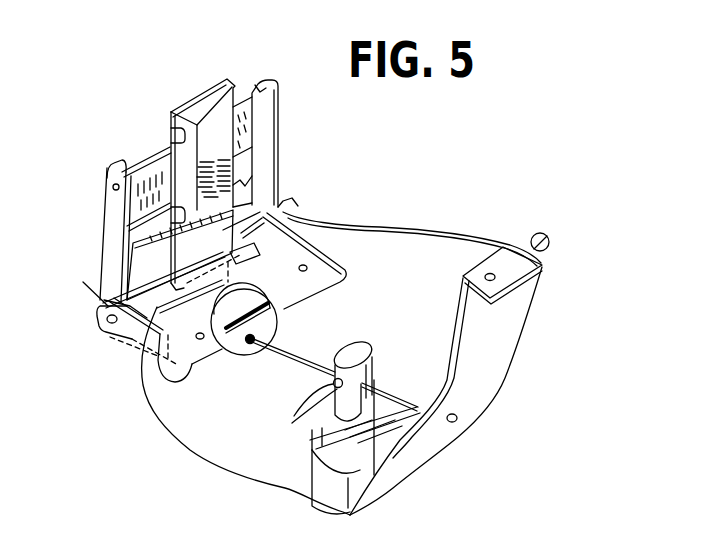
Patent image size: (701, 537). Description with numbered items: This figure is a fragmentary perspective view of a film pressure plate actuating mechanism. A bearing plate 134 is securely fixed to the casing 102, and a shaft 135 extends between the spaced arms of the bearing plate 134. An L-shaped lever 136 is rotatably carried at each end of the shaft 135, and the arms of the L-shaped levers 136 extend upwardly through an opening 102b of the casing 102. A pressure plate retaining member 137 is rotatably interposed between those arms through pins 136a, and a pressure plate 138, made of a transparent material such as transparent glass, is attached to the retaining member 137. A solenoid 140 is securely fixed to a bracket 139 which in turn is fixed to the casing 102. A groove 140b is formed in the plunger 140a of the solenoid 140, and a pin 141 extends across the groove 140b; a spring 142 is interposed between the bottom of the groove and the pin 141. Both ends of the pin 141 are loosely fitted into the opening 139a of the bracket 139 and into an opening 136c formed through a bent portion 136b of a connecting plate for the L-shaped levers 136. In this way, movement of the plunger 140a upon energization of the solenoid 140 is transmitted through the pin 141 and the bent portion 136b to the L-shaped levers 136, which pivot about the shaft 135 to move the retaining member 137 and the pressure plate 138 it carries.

The casing 102 is at (442, 210).
The opening of the casing 102b is at (103, 282).
The bearing plate 134 is at (325, 284).
The shaft 135 is at (148, 290).
The L-shaped lever 136 is at (281, 162).
The pin 136a is at (258, 90).
The bent portion of the connecting plate 136b is at (276, 313).
The opening of the bent portion 136c is at (228, 290).
The pressure plate retaining member 137 is at (150, 160).
The pressure plate 138 is at (207, 100).
The bracket 139 is at (495, 294).
The opening of the bracket 139a is at (447, 417).
The solenoid 140 is at (312, 468).
The plunger 140a is at (322, 428).
The groove 140b is at (368, 356).
The pin 141 is at (319, 398).
The spring 142 is at (282, 362).